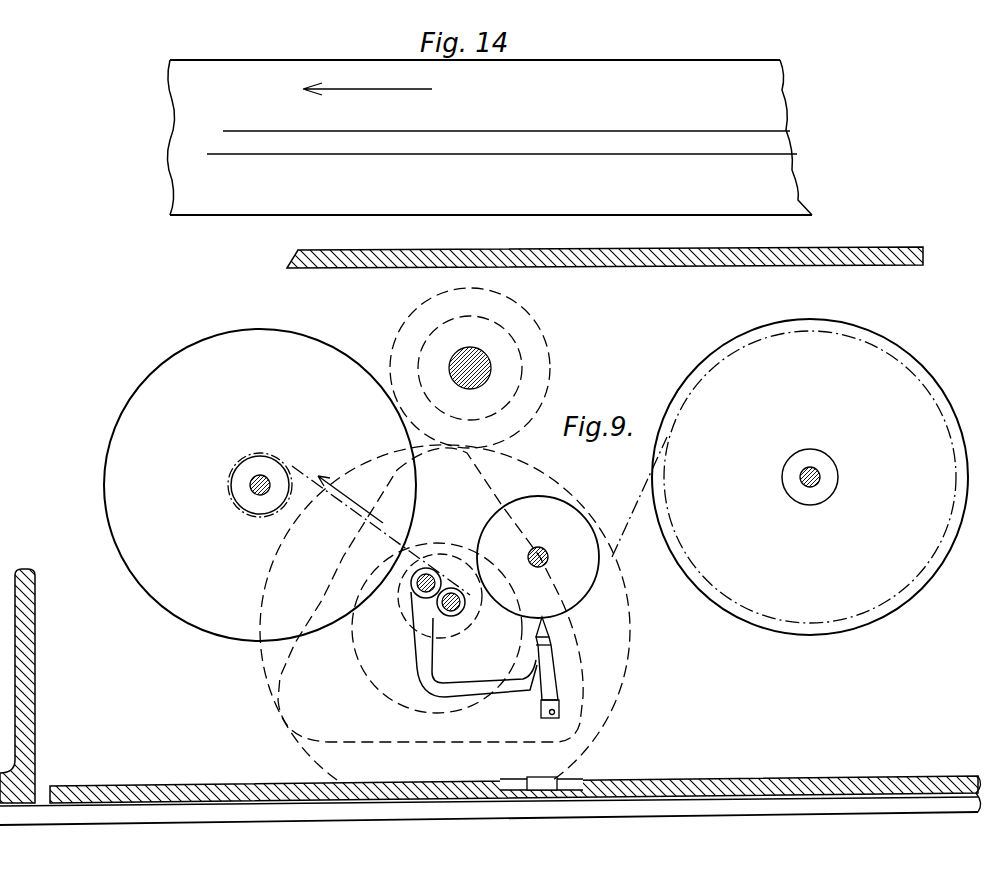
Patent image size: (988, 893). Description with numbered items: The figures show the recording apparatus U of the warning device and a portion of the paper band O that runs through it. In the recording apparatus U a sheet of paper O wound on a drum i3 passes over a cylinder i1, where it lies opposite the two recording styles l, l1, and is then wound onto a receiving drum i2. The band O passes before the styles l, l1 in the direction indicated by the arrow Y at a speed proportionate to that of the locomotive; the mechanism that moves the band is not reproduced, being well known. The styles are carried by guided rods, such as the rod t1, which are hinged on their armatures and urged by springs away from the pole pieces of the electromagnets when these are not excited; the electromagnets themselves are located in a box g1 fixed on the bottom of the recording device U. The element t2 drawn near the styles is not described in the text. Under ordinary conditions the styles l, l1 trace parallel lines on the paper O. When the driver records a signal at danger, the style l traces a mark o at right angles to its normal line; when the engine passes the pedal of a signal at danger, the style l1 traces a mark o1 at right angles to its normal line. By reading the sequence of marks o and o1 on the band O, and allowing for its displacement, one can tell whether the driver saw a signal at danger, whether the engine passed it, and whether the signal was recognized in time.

In FIG. 14, the paper band o is at (268, 154).
In FIG. 9, the paper band o is at (639, 499).
In FIG. 14, the mark o1 is at (280, 118).
In FIG. 14, the arrow Y is at (367, 78).
In FIG. 9, the arrow Y is at (381, 530).
In FIG. 9, the recording apparatus U is at (506, 368).
In FIG. 9, the cylinder i1 is at (538, 557).
In FIG. 9, the receiving drum i2 is at (260, 485).
In FIG. 9, the drum i3 is at (810, 477).
In FIG. 9, the rod t1 is at (408, 594).
In FIG. 9, the feed roller t2 is at (462, 604).
In FIG. 9, the recording style l is at (436, 623).
In FIG. 9, the recording style l1 is at (543, 678).
In FIG. 9, the box g1 is at (590, 645).